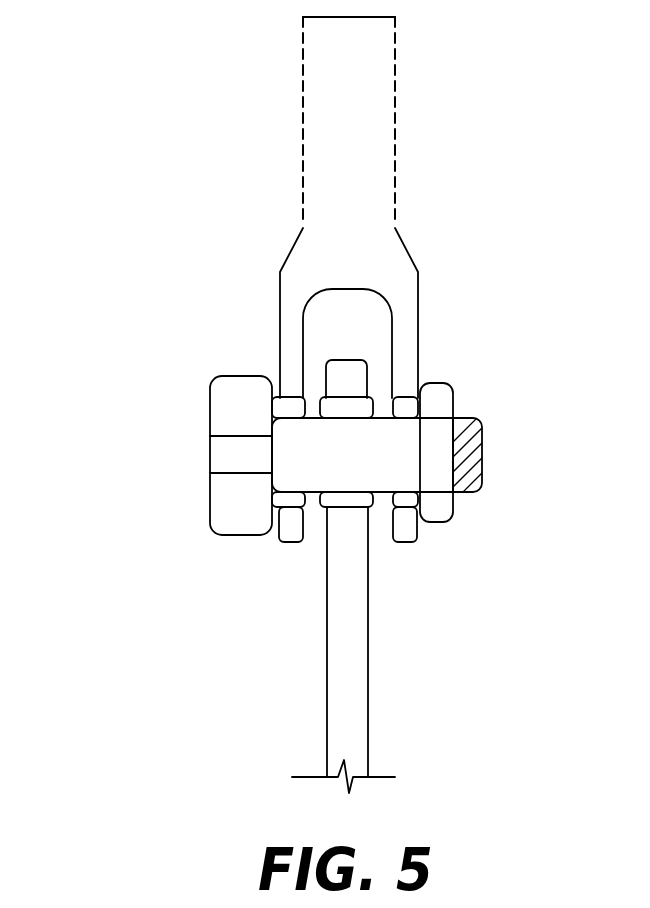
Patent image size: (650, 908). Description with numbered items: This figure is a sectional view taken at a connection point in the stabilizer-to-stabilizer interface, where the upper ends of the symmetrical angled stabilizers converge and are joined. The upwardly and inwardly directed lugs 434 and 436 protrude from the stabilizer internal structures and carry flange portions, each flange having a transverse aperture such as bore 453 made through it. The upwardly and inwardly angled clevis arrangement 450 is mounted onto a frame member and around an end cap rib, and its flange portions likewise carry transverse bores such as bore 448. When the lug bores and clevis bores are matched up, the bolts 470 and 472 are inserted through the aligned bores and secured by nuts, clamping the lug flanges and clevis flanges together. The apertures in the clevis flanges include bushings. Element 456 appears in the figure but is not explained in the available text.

The lug 434 is at (356, 642).
The lug 436 is at (347, 367).
The transverse bore 448 is at (296, 397).
The clevis arrangement 450 is at (407, 250).
The transverse bore 453 is at (348, 509).
The right upper tab 456 is at (403, 397).
The bolt 470 is at (177, 455).
The bolt 472 is at (203, 459).